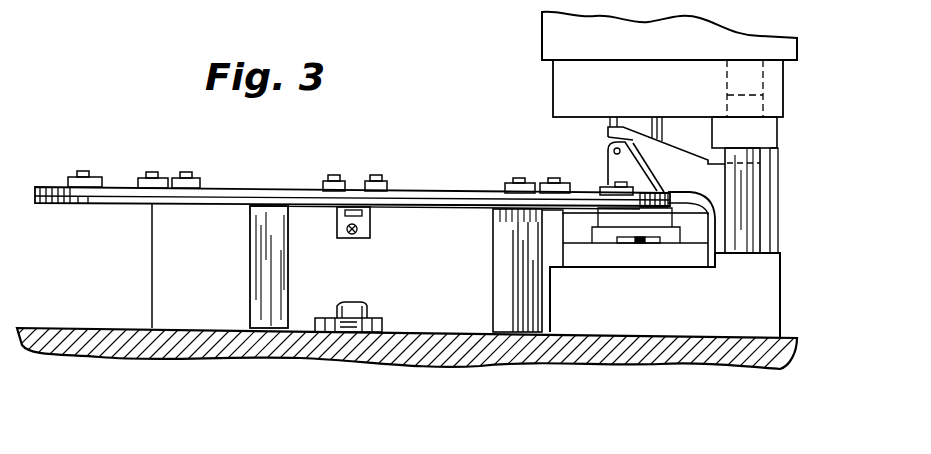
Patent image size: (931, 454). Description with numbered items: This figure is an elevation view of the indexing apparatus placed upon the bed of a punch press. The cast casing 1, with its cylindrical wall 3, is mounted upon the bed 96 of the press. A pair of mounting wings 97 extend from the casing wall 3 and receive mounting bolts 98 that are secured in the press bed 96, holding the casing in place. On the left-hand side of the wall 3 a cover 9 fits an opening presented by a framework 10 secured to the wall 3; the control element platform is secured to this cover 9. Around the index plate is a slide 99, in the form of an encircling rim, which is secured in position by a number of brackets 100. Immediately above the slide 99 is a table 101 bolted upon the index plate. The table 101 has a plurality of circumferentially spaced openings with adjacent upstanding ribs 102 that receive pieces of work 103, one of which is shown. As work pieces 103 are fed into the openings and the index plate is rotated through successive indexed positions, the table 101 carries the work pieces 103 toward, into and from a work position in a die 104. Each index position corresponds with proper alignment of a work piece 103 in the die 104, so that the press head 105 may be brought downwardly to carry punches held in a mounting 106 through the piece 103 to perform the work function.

The casing 1 is at (444, 306).
The cylindrical wall 3 is at (410, 333).
The cover 9 is at (162, 271).
The framework 10 is at (276, 213).
The bed 96 is at (486, 358).
The mounting wings 97 is at (383, 322).
The mounting bolts 98 is at (362, 302).
The slide 99 is at (105, 204).
The brackets 100 is at (373, 230).
The table 101 is at (267, 190).
The upstanding ribs 102 is at (92, 176).
The work piece 103 is at (617, 166).
The die 104 is at (683, 318).
The press head 105 is at (554, 39).
The mounting 106 is at (640, 125).